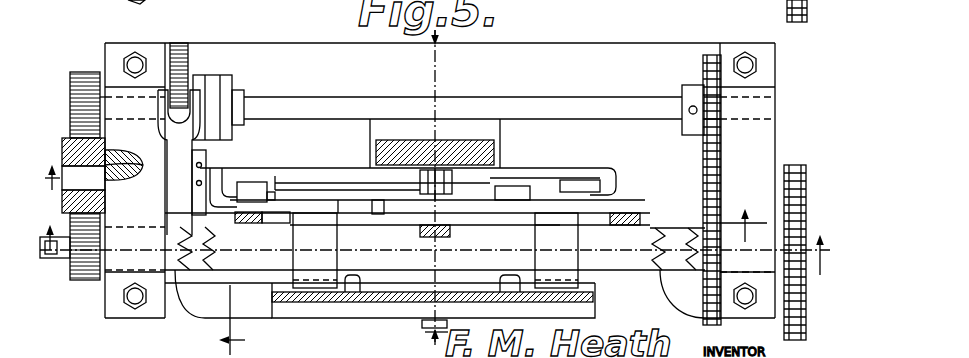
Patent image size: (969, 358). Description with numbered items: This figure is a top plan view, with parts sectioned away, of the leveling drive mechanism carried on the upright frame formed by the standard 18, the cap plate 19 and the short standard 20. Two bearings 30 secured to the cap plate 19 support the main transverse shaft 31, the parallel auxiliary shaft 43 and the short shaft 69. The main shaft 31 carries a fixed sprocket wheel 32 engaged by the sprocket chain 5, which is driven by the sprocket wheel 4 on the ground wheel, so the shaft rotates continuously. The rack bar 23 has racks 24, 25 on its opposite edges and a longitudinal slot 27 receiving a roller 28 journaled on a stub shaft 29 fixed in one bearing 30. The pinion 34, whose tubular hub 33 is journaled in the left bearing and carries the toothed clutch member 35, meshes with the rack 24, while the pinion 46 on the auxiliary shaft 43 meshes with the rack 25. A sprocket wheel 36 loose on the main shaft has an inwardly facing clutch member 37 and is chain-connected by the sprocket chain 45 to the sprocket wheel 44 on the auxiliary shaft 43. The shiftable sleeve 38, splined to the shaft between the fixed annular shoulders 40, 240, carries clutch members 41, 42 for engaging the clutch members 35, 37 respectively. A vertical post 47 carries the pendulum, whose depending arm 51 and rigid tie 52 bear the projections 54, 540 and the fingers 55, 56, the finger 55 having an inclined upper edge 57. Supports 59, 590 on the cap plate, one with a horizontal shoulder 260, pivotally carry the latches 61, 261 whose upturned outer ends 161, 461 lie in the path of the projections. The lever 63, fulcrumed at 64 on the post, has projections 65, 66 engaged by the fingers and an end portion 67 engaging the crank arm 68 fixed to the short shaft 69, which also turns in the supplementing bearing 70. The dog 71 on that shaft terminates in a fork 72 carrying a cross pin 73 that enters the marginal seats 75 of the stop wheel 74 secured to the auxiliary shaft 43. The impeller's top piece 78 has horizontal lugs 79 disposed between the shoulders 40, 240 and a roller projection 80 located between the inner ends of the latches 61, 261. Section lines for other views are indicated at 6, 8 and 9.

The standard 18 is at (120, 0).
The cap plate 19 is at (580, 45).
The short standard 20 is at (753, 7).
The rack bar 23 is at (70, 160).
The rack 24 is at (172, 228).
The rack 25 is at (80, 135).
The longitudinal slot 27 is at (108, 204).
The roller 28 is at (112, 158).
The stub shaft 29 is at (133, 165).
The bearing 30 is at (128, 46).
The main transverse shaft 31 is at (675, 300).
The sprocket wheel 32 is at (808, 352).
The tubular hub 33 is at (172, 248).
The pinion 34 is at (84, 282).
The toothed clutch member 35 is at (180, 300).
The sprocket wheel 36 is at (747, 304).
The toothed clutch member 37 is at (700, 222).
The shiftable sleeve 38 is at (265, 264).
The annular shoulder 40 is at (556, 250).
The toothed clutch member 41 is at (206, 254).
The toothed clutch member 42 is at (658, 245).
The auxiliary shaft 43 is at (590, 98).
The sprocket wheel 44 is at (700, 85).
The sprocket chain 45 is at (721, 176).
The pinion 46 is at (84, 72).
The vertical post 47 is at (503, 150).
The pendulum arm 51 is at (276, 223).
The tie 52 is at (498, 184).
The projection 54 is at (503, 213).
The finger 55 is at (330, 181).
The finger 56 is at (568, 180).
The inclined upper edge 57 is at (293, 181).
The support 59 is at (535, 250).
The latch 61 is at (445, 237).
The lever 63 is at (540, 170).
The fulcrum 64 is at (428, 196).
The projection 65 is at (608, 188).
The projection 66 is at (277, 176).
The end portion 67 is at (247, 177).
The crank arm 68 is at (256, 192).
The short shaft 69 is at (204, 226).
The supplementing bearing 70 is at (192, 185).
The dog 71 is at (179, 162).
The fork 72 is at (160, 108).
The cross pin 73 is at (180, 105).
The stop wheel 74 is at (200, 45).
The marginal seat 75 is at (178, 60).
The top piece 78 is at (425, 255).
The lug 79 is at (352, 302).
The roller projection 80 is at (422, 266).
The upturned outer end 161 is at (549, 222).
The annular shoulder 240 is at (315, 250).
The horizontal shoulder 260 is at (379, 262).
The latch 261 is at (406, 226).
The upturned outer end 461 is at (346, 210).
The projection 540 is at (378, 210).
The support 590 is at (350, 226).
The sprocket wheel 4 is at (431, 241).
The sprocket chain 5 is at (801, 22).
The section line 6 is at (393, 198).
The section line 8 is at (237, 320).
The section line 9 is at (438, 189).